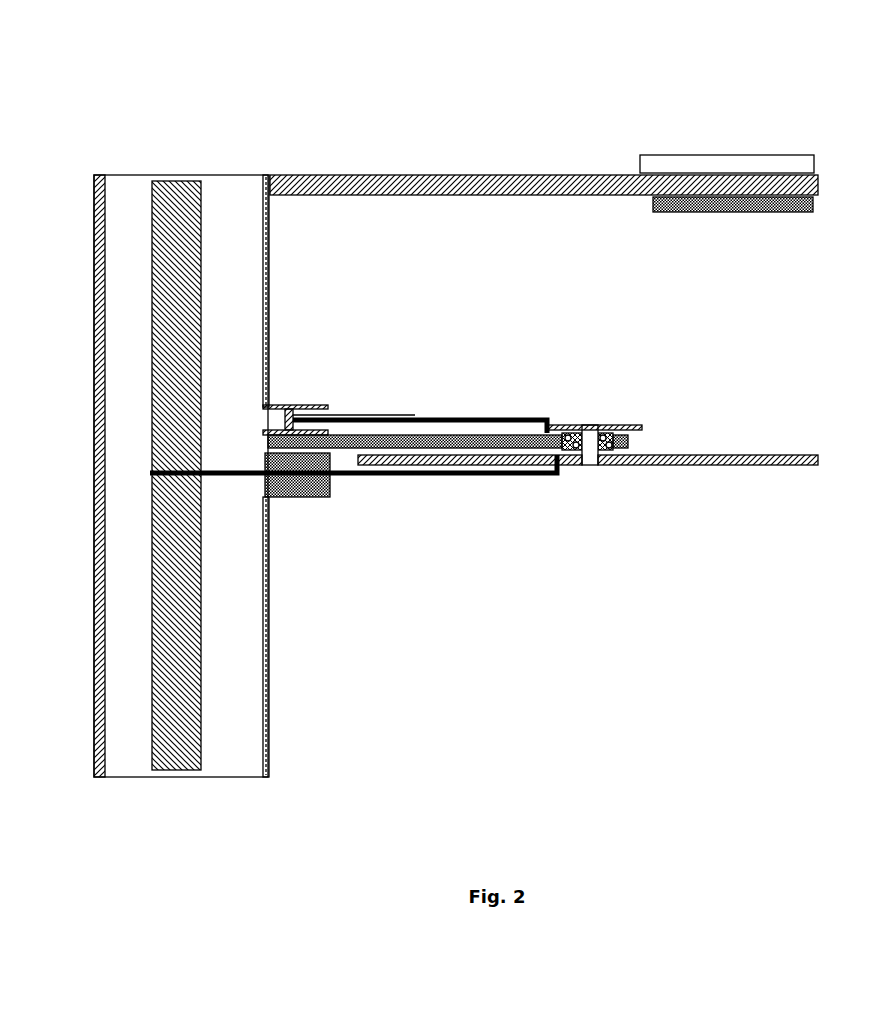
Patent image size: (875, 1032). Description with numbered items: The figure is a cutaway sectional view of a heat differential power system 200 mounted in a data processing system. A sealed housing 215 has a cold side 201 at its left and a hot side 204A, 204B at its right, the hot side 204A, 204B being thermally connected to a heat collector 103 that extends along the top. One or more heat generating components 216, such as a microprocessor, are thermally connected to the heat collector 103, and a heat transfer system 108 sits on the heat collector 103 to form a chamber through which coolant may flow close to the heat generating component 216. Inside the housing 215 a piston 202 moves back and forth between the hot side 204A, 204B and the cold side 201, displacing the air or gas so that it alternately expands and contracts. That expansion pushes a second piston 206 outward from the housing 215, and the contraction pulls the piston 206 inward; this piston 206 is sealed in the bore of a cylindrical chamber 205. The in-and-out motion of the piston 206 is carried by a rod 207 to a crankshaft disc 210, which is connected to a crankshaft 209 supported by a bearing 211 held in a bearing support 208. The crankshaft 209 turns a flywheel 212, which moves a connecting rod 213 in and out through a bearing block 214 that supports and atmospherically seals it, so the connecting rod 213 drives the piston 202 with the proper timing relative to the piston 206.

The heat differential power system 200 is at (813, 100).
The cold side 201 is at (94, 176).
The piston 202 is at (181, 178).
The sealed housing 215 is at (232, 175).
The heat collector 103 is at (383, 176).
The heat transfer system 108 is at (735, 155).
The heat generating component 216 is at (741, 212).
The hot side 204A is at (272, 243).
The hot side 204B is at (270, 724).
The chamber 205 is at (310, 428).
The piston 206 is at (415, 415).
The rod 207 is at (517, 418).
The bearing support 208 is at (490, 435).
The crankshaft 209 is at (587, 425).
The crankshaft disc 210 is at (645, 425).
The bearing 211 is at (600, 452).
The flywheel 212 is at (760, 467).
The connecting rod 213 is at (536, 477).
The bearing block 214 is at (312, 498).